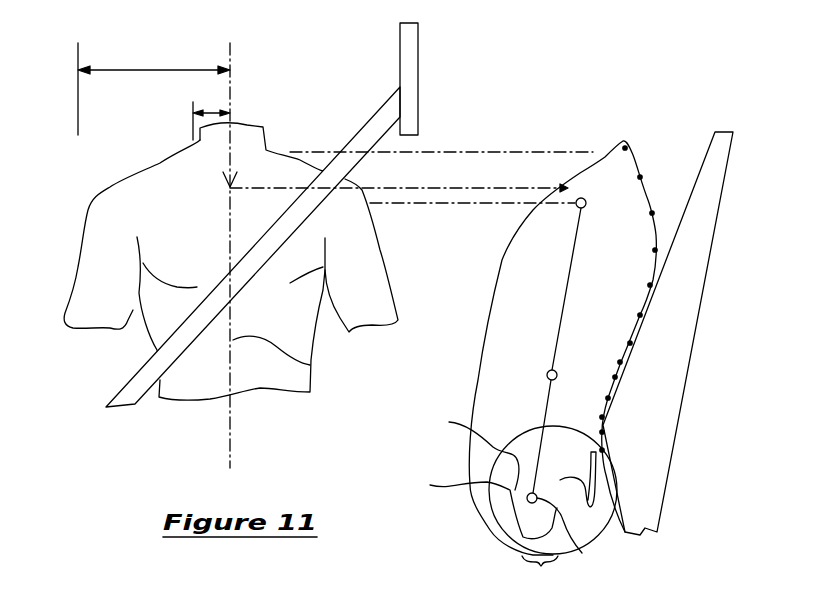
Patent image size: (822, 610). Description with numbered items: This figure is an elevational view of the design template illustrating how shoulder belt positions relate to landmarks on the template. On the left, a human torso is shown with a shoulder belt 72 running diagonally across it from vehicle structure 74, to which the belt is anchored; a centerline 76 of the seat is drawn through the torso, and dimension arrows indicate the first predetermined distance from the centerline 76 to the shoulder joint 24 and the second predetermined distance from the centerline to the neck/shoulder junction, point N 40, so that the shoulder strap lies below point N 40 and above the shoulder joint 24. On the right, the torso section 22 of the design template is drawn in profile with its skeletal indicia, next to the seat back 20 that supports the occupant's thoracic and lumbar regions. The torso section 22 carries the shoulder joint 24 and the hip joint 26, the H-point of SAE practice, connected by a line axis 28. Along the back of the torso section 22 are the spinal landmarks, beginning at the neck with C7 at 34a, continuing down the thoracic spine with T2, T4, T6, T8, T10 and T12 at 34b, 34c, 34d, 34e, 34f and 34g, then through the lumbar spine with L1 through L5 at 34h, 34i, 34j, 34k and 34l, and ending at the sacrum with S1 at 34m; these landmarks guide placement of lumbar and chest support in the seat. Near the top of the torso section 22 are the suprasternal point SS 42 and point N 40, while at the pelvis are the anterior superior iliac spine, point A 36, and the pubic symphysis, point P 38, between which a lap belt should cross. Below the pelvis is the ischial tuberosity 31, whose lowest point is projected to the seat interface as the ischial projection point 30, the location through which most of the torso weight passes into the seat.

The seat back 20 is at (720, 157).
The torso section 22 is at (505, 352).
The shoulder joint 24 is at (77, 58).
The hip joint 26 is at (582, 553).
The line axis 28 is at (562, 310).
The point I_D^0 30 is at (540, 576).
The ischial tuberosity 31 is at (510, 548).
The spinal landmark C7 34a is at (625, 148).
The spinal landmark T2 34b is at (640, 177).
The spinal landmark T4 34c is at (653, 213).
The spinal landmark T6 34d is at (655, 250).
The spinal landmark T8 34e is at (650, 285).
The spinal landmark T10 34f is at (640, 315).
The spinal landmark T12 34g is at (630, 343).
The spinal landmark L1 34h is at (620, 362).
The spinal landmark L2 34i is at (615, 377).
The spinal landmark L3 34j is at (608, 398).
The spinal landmark L4 34k is at (602, 417).
The spinal landmark L5 34l is at (602, 432).
The spinal landmark S1 34m is at (602, 450).
The point A (anterior superior iliac spine) 36 is at (471, 450).
The point P (pubic symphysis) 38 is at (480, 508).
The point N (neck/shoulder junction) 40 is at (192, 103).
The point SS (suprasternal) 42 is at (566, 186).
The shoulder belt 72 is at (368, 132).
The vehicle structure 74 is at (410, 52).
The centerline 76 is at (310, 365).